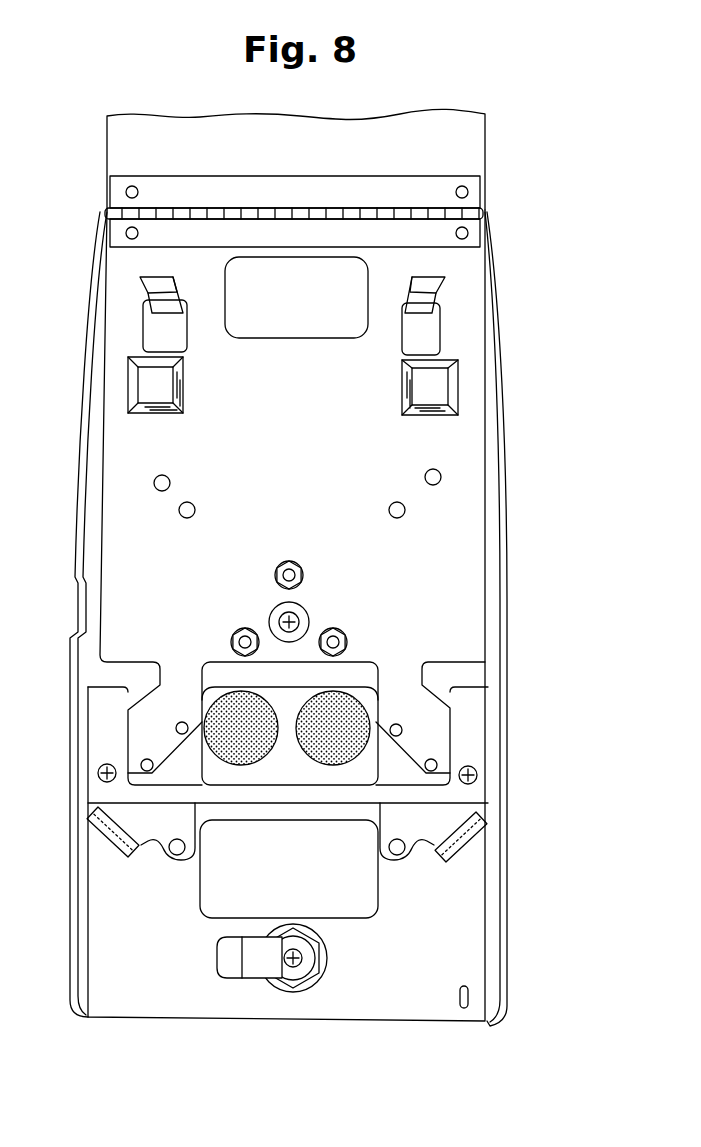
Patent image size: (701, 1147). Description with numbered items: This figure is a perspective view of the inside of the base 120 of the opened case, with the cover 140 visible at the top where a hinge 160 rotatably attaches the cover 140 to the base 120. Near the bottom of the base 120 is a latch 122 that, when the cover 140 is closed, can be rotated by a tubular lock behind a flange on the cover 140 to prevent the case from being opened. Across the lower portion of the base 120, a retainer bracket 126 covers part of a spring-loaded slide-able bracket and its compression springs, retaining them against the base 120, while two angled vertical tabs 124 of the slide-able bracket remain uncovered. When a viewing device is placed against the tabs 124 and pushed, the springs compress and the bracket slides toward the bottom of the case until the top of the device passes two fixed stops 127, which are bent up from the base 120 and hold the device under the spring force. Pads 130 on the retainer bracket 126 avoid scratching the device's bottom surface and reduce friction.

The base 120 is at (291, 580).
The latch 122 is at (232, 967).
The angled vertical tabs 124 is at (108, 830).
The retainer bracket 126 is at (345, 792).
The fixed stops 127 is at (163, 303).
The pads 130 is at (240, 763).
The cover 140 is at (485, 143).
The hinge 160 is at (167, 207).